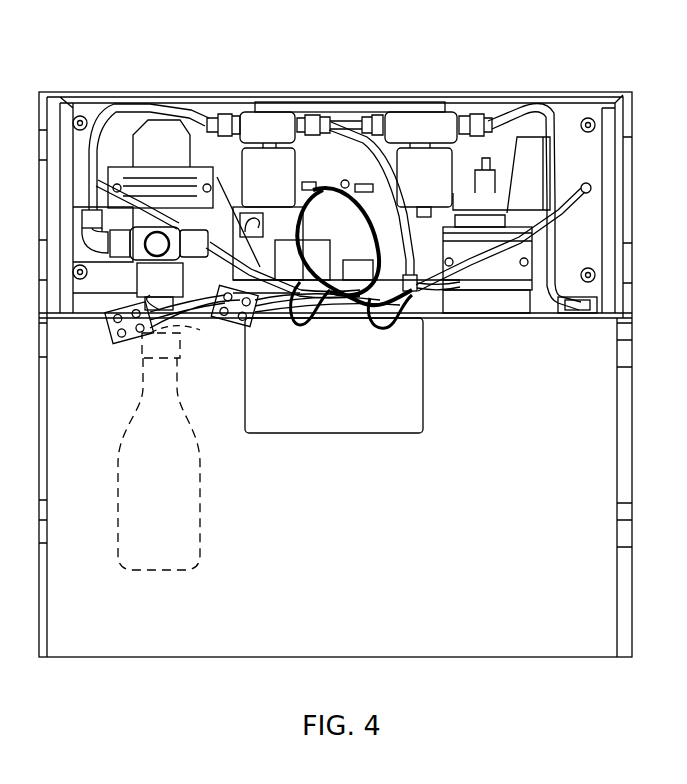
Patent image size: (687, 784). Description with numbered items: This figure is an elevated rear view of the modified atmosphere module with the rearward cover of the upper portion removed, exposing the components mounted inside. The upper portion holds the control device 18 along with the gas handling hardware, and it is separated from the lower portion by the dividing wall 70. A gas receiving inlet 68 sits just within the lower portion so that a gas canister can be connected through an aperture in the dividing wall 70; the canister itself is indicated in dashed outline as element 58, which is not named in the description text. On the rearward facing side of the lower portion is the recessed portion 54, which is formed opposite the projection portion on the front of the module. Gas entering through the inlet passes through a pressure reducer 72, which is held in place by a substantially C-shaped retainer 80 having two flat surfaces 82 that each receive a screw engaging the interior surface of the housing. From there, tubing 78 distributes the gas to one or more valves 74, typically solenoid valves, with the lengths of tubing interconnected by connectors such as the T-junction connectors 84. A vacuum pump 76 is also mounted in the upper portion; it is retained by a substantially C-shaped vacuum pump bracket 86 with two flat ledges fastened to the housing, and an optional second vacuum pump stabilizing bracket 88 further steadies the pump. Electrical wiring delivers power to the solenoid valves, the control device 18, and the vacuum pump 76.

The control device 18 is at (279, 192).
The recessed portion 54 is at (342, 387).
The bottle 58 is at (185, 503).
The gas receiving inlet 68 is at (177, 330).
The dividing wall 70 is at (608, 313).
The pressure reducer 72 is at (82, 225).
The valves 74 is at (268, 108).
The vacuum pump 76 is at (507, 217).
The tubing 78 is at (117, 170).
The C-shaped retainer 80 is at (162, 173).
The flat surfaces 82 is at (103, 108).
The T-junction connectors 84 is at (412, 295).
The vacuum pump bracket 86 is at (532, 268).
The vacuum pump stabilizing bracket 88 is at (528, 157).